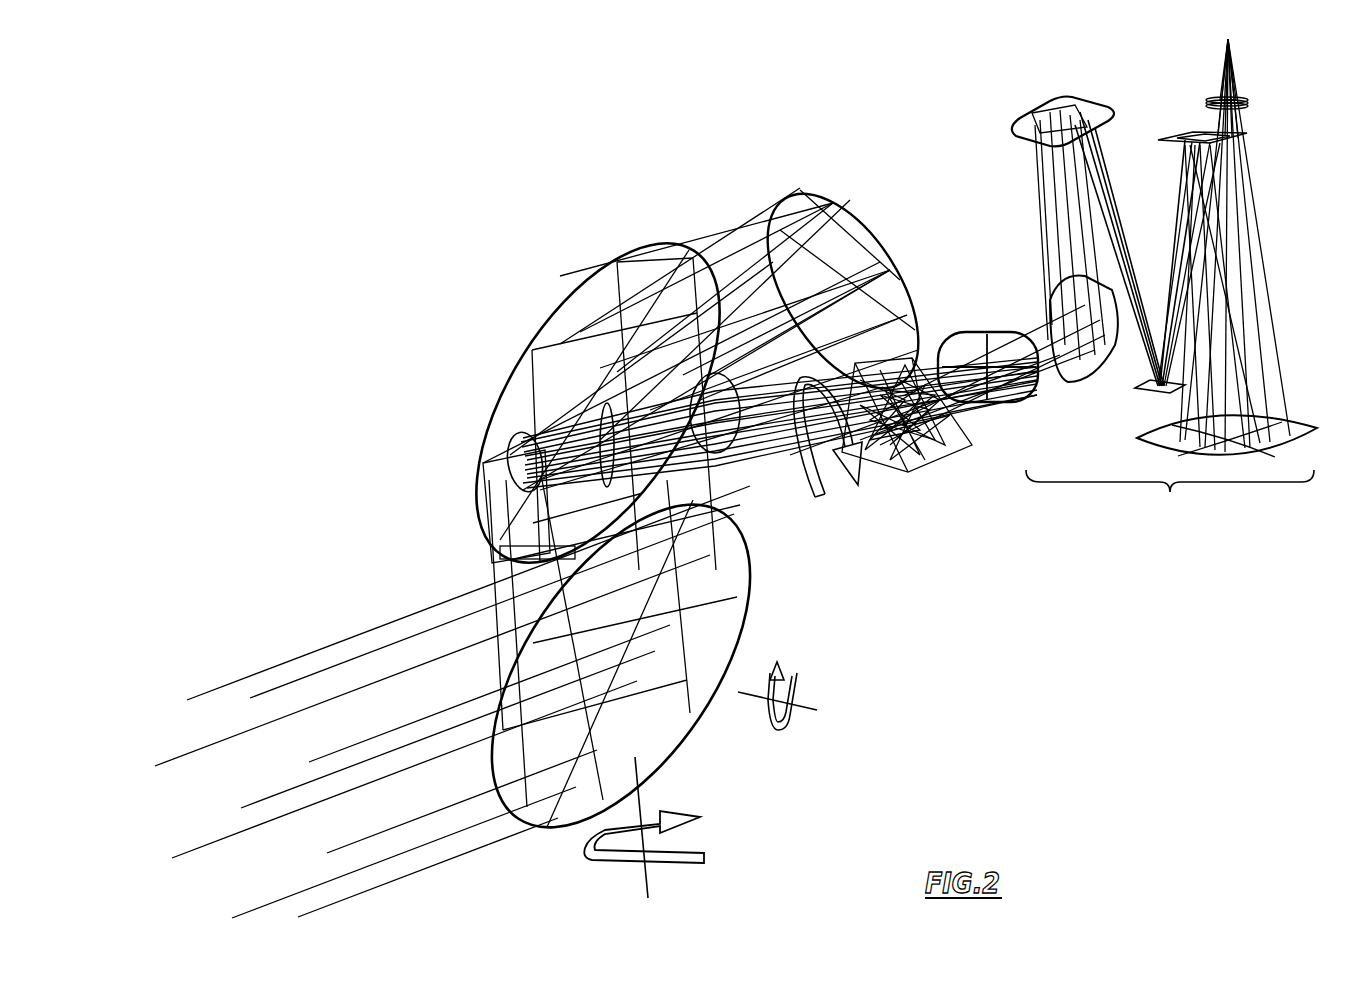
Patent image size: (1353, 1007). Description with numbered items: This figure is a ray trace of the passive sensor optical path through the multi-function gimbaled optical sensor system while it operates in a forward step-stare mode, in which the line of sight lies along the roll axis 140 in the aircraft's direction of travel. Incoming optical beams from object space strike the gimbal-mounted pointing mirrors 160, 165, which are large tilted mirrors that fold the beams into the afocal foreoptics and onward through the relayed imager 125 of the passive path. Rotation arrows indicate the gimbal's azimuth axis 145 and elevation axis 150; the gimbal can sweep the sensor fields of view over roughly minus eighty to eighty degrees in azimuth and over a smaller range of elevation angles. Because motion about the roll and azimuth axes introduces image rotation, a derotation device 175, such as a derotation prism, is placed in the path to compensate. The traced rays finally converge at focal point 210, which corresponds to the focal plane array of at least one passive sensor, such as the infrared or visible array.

The relayed imager 125 is at (1053, 293).
The rotation direction of optical element 140 is at (837, 492).
The azimuth axis 145 is at (693, 833).
The elevation axis 150 is at (820, 693).
The pointing mirror 160 is at (690, 728).
The pointing mirror 165 is at (510, 352).
The derotation device 175 is at (927, 465).
The focal point 210 is at (1228, 38).